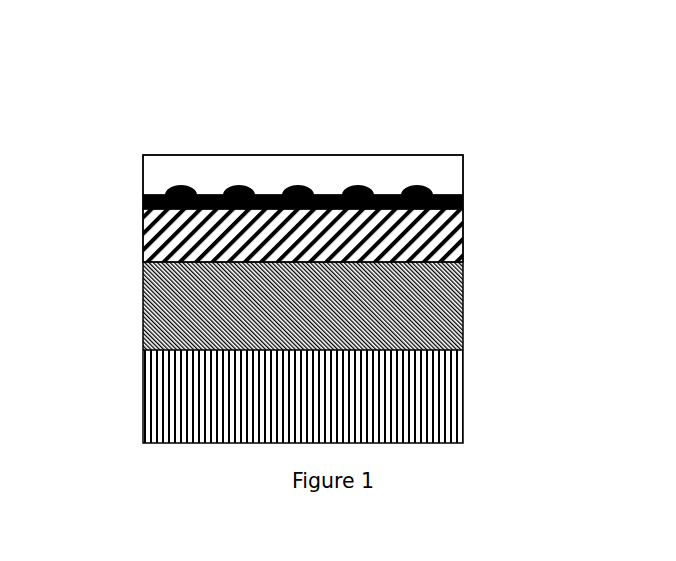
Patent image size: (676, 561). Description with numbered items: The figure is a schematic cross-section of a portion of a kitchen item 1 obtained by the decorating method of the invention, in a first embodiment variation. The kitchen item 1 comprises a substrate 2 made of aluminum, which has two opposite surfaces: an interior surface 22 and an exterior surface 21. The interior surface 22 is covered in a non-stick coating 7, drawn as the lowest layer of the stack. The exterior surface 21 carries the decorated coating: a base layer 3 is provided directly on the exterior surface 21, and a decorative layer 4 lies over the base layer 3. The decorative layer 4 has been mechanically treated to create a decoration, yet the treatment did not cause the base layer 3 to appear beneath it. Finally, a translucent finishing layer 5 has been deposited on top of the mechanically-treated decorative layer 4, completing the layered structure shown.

The kitchen item 1 is at (147, 86).
The substrate 2 is at (306, 307).
The exterior surface 21 is at (172, 269).
The interior surface 22 is at (178, 344).
The base layer 3 is at (474, 232).
The decorative layer 4 is at (472, 197).
The translucent finishing layer 5 is at (470, 156).
The non-stick coating 7 is at (474, 377).